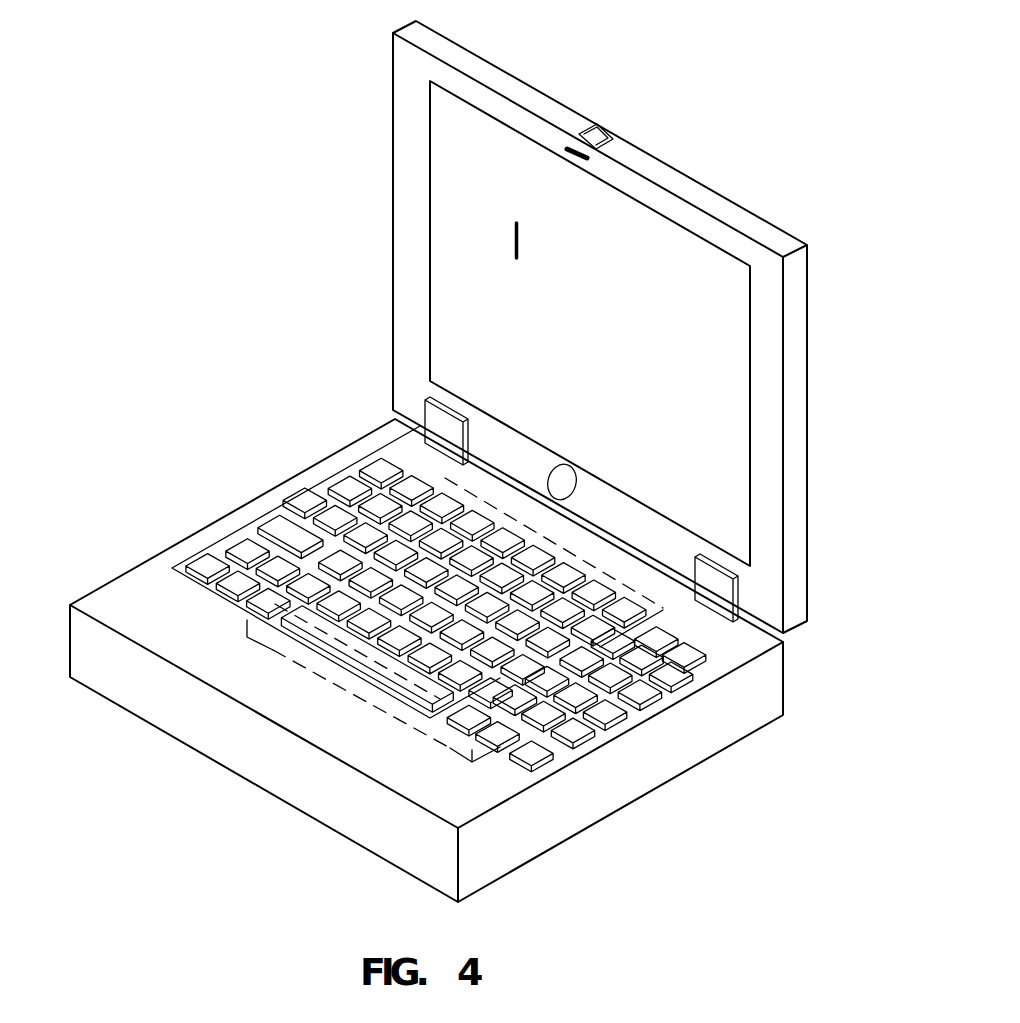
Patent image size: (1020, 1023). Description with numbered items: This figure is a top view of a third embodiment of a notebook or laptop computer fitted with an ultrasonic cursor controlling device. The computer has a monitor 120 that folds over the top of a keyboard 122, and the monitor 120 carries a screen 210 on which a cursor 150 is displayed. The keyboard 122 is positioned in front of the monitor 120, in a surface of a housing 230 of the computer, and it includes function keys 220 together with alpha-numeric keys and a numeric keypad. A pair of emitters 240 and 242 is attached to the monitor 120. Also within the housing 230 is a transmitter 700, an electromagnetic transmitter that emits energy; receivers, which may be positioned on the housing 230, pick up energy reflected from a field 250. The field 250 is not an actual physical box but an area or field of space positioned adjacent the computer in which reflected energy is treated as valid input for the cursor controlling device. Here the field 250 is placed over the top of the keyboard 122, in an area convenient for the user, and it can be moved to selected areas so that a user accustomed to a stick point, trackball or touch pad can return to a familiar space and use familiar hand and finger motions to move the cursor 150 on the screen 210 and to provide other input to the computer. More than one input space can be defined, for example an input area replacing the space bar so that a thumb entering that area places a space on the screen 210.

The monitor 120 is at (403, 217).
The keyboard 122 is at (275, 500).
The cursor 150 is at (522, 233).
The screen 210 is at (720, 407).
The function keys 220 is at (380, 472).
The housing 230 is at (105, 678).
The emitter 240 is at (442, 428).
The emitter 242 is at (717, 588).
The field 250 is at (355, 697).
The transmitter 700 is at (560, 482).